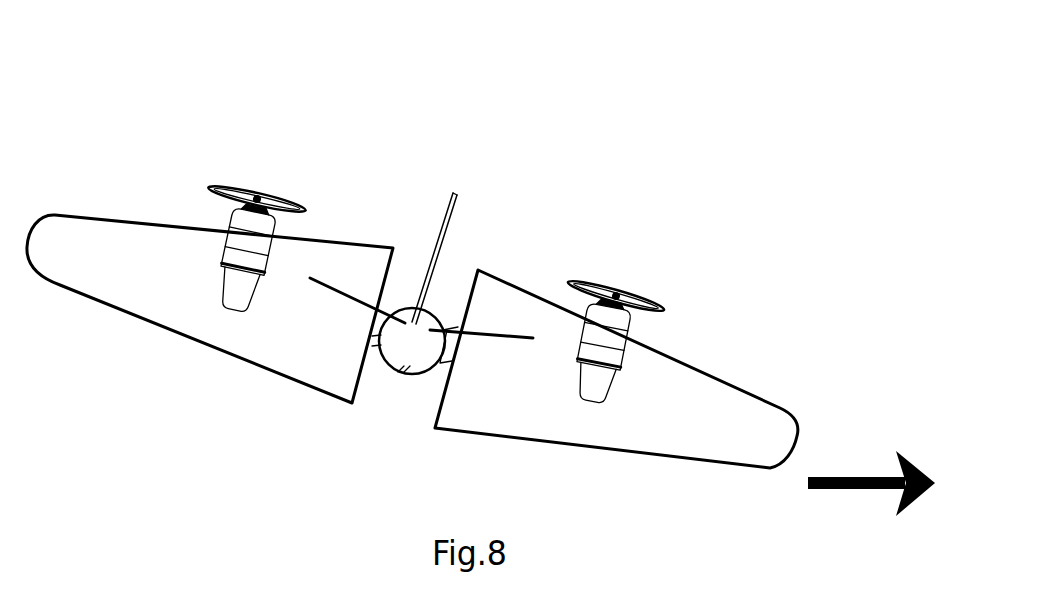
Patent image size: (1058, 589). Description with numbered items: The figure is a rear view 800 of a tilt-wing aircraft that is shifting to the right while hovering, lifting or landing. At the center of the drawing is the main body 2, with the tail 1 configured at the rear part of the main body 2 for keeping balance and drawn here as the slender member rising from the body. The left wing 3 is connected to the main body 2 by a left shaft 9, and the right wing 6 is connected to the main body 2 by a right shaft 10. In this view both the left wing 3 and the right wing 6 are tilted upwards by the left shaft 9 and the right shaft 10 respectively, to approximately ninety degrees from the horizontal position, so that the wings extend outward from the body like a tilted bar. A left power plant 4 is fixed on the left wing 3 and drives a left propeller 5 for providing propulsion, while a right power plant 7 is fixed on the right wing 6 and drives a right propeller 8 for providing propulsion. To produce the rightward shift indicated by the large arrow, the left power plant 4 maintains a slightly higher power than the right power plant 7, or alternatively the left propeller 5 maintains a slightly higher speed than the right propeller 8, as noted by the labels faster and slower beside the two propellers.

The rear view 800 is at (193, 52).
The tail 1 is at (437, 233).
The main body 2 is at (437, 307).
The left wing 3 is at (140, 263).
The left power plant 4 is at (247, 242).
The left propeller 5 is at (284, 200).
The right wing 6 is at (507, 312).
The right power plant 7 is at (580, 343).
The right propeller 8 is at (653, 300).
The left shaft 9 is at (375, 341).
The right shaft 10 is at (443, 363).